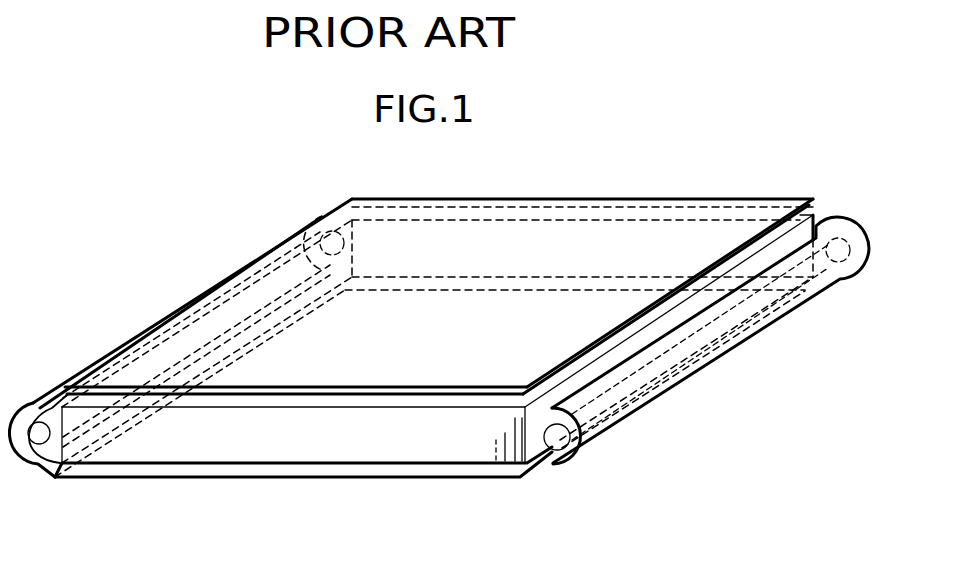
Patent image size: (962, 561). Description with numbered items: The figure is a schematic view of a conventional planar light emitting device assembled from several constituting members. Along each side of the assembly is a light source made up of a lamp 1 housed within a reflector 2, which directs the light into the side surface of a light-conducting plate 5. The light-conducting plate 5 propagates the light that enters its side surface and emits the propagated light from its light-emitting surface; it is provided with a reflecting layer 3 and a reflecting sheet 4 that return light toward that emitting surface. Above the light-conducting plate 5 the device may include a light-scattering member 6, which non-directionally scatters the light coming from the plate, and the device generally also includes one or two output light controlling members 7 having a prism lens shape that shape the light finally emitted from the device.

The lamp 1 is at (37, 443).
The reflector 2 is at (260, 256).
The reflecting layer 3 is at (492, 470).
The reflecting sheet 4 is at (262, 477).
The light-conducting plate 5 is at (417, 452).
The light-scattering member 6 is at (373, 397).
The output light controlling member 7 is at (578, 200).